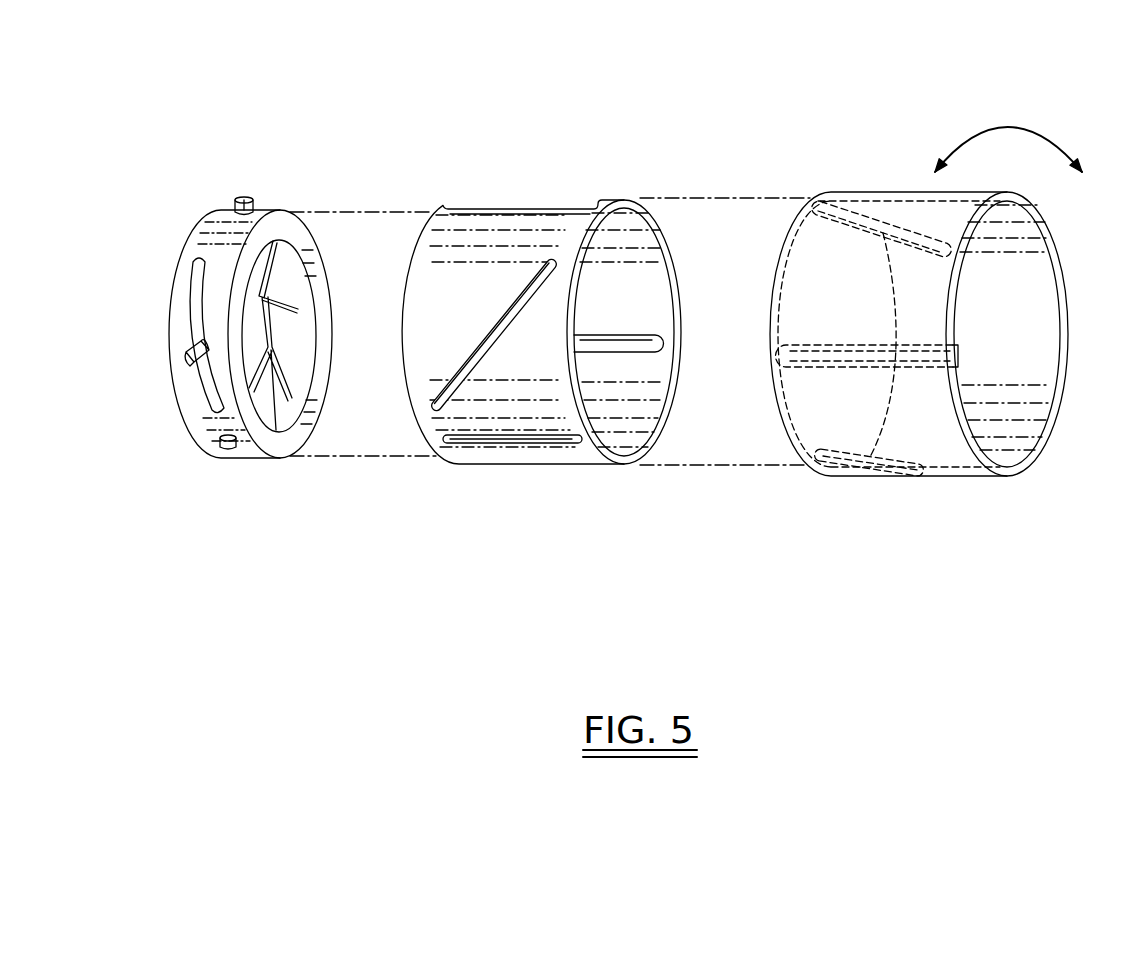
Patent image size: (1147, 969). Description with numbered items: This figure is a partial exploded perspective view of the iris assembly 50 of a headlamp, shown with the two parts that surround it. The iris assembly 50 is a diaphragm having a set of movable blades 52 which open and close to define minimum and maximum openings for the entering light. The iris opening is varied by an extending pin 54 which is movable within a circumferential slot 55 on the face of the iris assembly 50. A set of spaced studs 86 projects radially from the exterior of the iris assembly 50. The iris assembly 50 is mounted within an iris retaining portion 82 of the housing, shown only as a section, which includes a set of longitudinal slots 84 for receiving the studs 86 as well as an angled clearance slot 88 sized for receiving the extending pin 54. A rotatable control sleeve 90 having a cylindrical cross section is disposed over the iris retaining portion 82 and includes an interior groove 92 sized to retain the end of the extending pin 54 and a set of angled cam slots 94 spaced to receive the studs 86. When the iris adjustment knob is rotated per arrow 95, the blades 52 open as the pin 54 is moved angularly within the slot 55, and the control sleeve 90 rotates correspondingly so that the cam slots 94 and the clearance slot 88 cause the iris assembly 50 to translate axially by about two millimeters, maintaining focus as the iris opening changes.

The iris assembly 50 is at (208, 212).
The movable blades 52 is at (290, 454).
The extending pin 54 is at (187, 355).
The circumferential slot 55 is at (197, 295).
The iris retaining portion 82 is at (595, 465).
The longitudinal slots 84 is at (539, 207).
The studs 86 is at (247, 198).
The angled clearance slot 88 is at (539, 319).
The control sleeve 90 is at (955, 478).
The interior groove 92 is at (969, 347).
The angled cam slots 94 is at (843, 210).
The rotation arrow 95 is at (1007, 127).